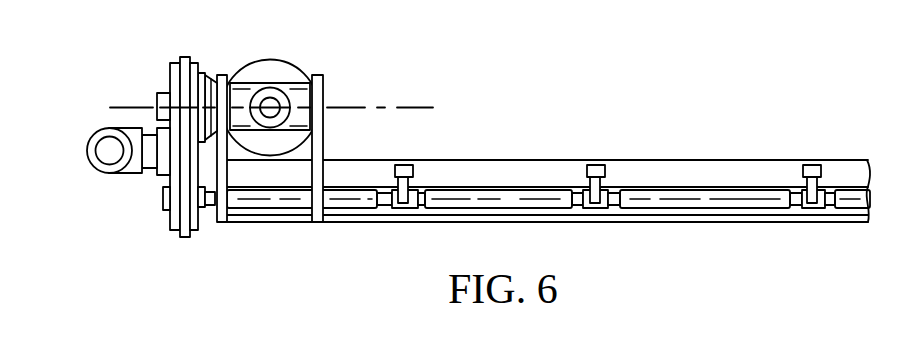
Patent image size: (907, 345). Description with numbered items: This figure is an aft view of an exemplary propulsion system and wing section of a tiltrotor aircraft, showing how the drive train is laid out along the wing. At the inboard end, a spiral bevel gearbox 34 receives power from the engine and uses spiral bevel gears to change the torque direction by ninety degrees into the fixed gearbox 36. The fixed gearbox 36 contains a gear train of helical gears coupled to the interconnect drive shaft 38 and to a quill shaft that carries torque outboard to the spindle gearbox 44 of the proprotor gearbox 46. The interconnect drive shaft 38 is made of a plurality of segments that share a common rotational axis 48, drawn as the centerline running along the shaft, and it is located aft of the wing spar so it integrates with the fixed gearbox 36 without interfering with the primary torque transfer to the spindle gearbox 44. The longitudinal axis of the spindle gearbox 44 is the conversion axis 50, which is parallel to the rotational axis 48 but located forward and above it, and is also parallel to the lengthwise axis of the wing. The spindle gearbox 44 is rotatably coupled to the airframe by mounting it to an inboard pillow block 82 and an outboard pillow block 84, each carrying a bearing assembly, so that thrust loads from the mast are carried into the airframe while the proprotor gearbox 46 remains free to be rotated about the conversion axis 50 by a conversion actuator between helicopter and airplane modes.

The spiral bevel gearbox 34 is at (83, 150).
The fixed gearbox 36 is at (170, 220).
The interconnect drive shaft 38 is at (352, 210).
The spindle gearbox 44 is at (283, 80).
The proprotor gearbox 46 is at (268, 58).
The rotational axis 48 is at (270, 202).
The conversion axis 50 is at (418, 107).
The inboard pillow block 82 is at (327, 88).
The outboard pillow block 84 is at (208, 77).